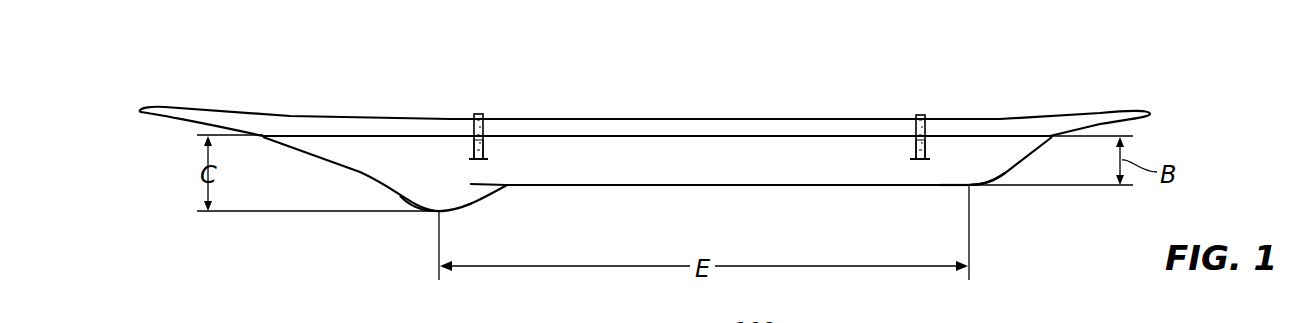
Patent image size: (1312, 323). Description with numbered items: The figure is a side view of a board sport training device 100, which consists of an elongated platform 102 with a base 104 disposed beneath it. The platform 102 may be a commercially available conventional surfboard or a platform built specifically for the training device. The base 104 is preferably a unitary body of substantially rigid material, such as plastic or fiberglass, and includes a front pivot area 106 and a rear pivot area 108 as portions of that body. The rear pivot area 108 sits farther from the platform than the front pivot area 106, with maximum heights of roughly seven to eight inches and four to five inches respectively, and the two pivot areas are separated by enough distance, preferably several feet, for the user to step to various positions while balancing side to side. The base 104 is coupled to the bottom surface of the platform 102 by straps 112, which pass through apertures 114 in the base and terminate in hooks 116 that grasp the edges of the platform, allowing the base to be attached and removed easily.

The board sport training device 100 is at (310, 96).
The elongated platform 102 is at (800, 118).
The base 104 is at (727, 188).
The front pivot area 106 is at (978, 190).
The rear pivot area 108 is at (436, 215).
The straps 112 is at (483, 150).
The apertures 114 is at (478, 161).
The hooks 116 is at (480, 114).